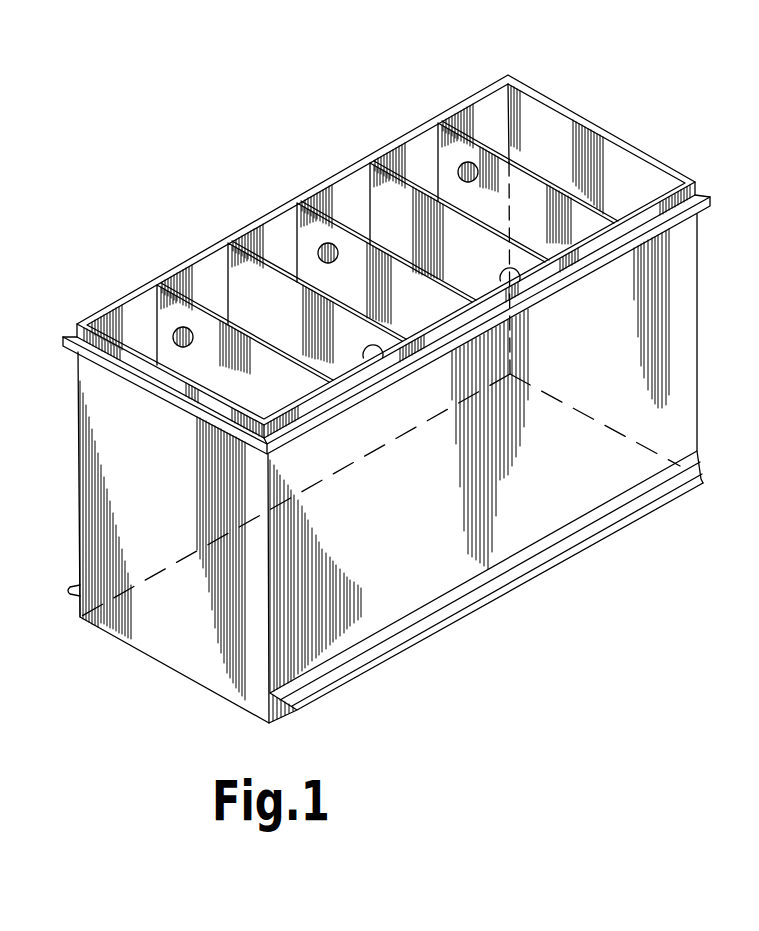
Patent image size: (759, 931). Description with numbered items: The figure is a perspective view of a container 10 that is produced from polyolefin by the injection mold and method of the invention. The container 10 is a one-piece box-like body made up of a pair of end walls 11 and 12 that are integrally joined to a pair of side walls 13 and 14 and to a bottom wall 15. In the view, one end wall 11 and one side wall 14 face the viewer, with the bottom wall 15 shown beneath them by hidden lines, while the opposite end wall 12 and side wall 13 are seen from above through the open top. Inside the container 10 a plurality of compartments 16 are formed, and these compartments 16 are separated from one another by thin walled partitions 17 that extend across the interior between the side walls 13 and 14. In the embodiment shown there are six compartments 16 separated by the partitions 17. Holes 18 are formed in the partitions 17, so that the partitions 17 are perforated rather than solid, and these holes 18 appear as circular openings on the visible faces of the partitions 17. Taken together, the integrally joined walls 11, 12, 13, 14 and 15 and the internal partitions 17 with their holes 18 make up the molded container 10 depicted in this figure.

The container 10 is at (691, 359).
The end wall 11 is at (79, 441).
The end wall 12 is at (593, 123).
The side wall 13 is at (202, 273).
The side wall 14 is at (634, 438).
The bottom wall 15 is at (197, 650).
The compartment 16 is at (120, 323).
The partition 17 is at (182, 292).
The hole 18 is at (320, 247).